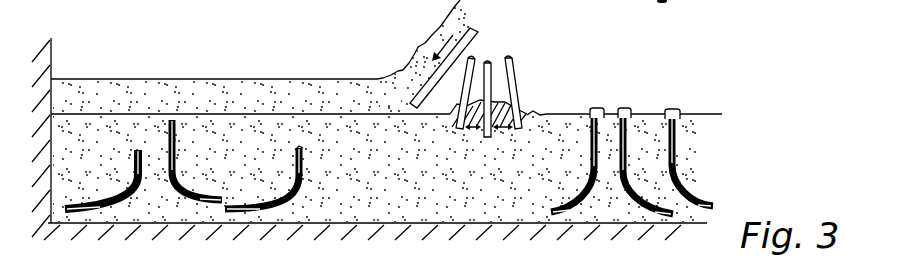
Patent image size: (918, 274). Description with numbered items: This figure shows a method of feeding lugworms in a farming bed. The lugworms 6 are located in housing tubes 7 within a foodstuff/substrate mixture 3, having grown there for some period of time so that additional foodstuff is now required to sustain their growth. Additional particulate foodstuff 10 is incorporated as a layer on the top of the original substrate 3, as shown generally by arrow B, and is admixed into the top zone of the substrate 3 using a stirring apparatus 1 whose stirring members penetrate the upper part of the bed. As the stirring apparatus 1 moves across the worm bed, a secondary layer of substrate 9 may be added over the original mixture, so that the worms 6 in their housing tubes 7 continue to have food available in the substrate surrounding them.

The stirring apparatus 1 is at (497, 84).
The foodstuff/substrate mixture 3 is at (378, 164).
The lugworms 6 is at (648, 200).
The housing tubes 7 is at (302, 146).
The secondary layer of substrate 9 is at (211, 96).
The further foodstuff 10 is at (528, 120).
The arrow B is at (556, 111).